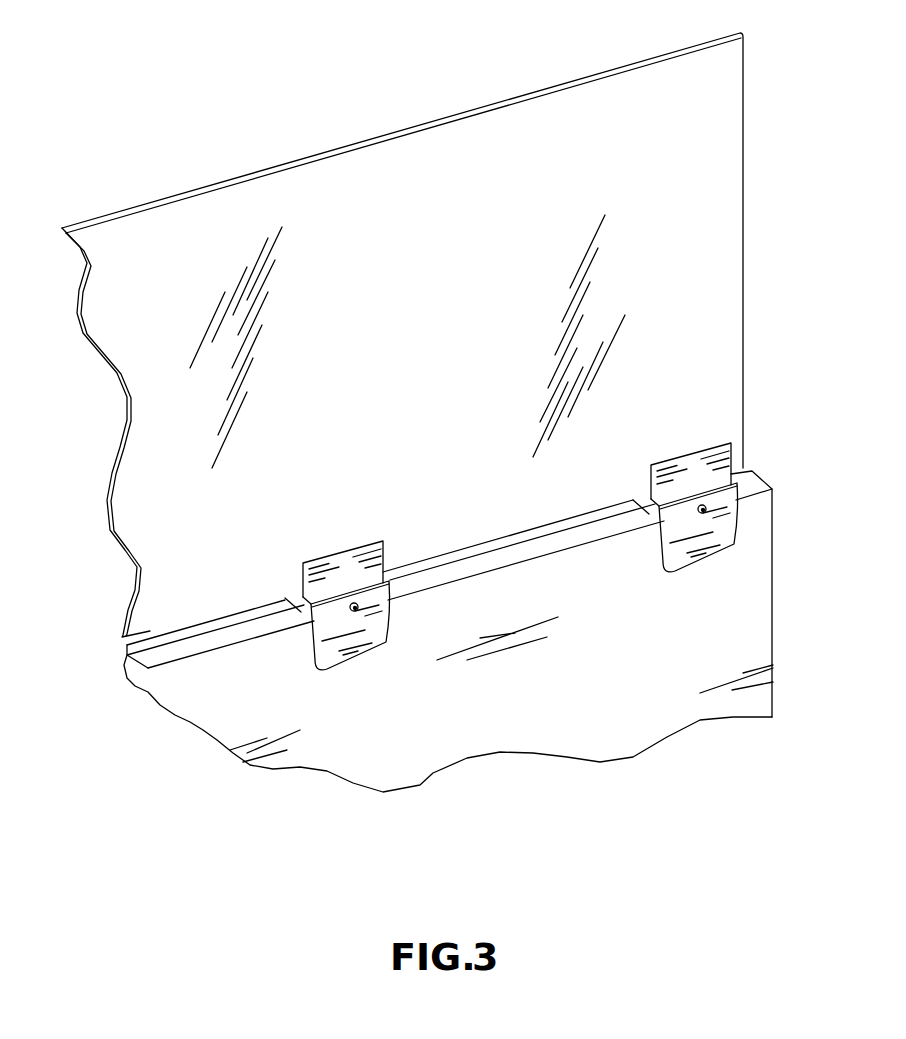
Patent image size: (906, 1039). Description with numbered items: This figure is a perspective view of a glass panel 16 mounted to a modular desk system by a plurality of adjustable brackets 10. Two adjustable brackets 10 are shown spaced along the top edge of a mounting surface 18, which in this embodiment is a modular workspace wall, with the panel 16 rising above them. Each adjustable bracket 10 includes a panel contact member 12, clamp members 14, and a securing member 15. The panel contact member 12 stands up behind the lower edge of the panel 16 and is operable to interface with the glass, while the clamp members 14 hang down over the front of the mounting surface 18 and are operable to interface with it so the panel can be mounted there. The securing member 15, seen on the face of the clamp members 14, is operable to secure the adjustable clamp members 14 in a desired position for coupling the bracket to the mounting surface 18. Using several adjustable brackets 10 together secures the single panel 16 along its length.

The adjustable bracket 10 is at (573, 598).
The panel contact member 12 is at (742, 432).
The clamp members 14 is at (760, 544).
The securing member 15 is at (771, 486).
The panel 16 is at (705, 127).
The mounting surface 18 is at (603, 720).